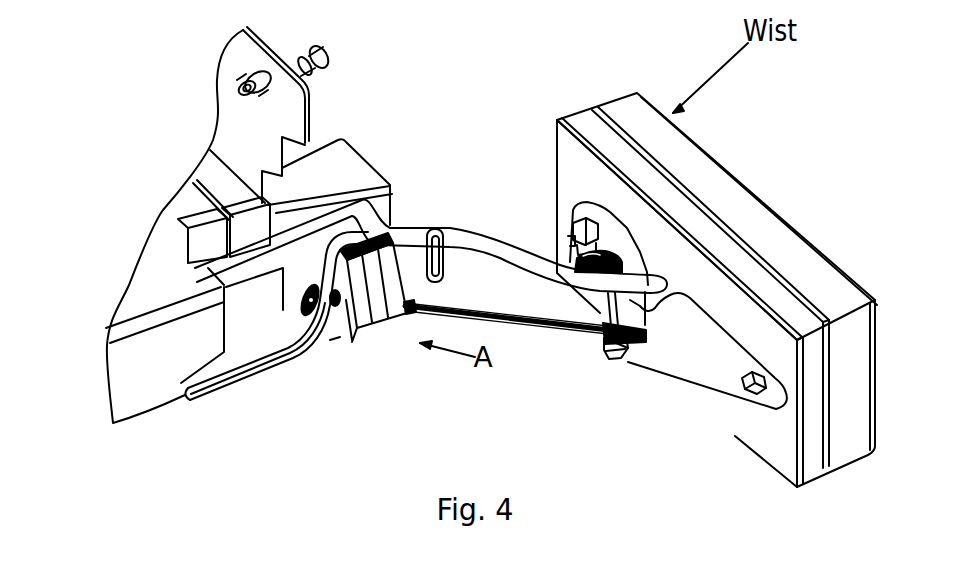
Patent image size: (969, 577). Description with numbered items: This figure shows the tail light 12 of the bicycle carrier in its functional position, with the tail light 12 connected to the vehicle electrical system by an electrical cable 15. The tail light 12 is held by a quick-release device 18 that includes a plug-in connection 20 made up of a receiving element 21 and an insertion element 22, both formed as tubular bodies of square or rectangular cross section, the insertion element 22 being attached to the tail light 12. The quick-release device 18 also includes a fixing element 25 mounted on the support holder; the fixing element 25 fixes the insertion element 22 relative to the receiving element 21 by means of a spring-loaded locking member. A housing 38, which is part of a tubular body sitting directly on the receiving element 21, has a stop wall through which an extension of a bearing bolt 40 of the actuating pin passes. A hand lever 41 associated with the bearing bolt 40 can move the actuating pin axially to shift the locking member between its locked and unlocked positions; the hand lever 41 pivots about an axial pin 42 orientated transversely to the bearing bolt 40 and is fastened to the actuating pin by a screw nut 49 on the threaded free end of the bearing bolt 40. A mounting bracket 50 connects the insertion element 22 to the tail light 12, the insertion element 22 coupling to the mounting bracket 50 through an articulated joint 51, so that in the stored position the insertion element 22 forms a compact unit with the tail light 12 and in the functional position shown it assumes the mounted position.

The tail light 12 is at (772, 471).
The electrical cable 15 is at (458, 242).
The quick-release device 18 is at (352, 340).
The plug-in connection 20 is at (415, 323).
The receiving element 21 is at (413, 307).
The insertion element 22 is at (547, 308).
The fixing element 25 is at (335, 337).
The housing 38 is at (380, 335).
The bearing bolt 40 is at (280, 352).
The hand lever 41 is at (187, 407).
The axial pin 42 is at (359, 240).
The screw nut 49 is at (305, 328).
The mounting bracket 50 is at (713, 373).
The articulated joint 51 is at (618, 368).